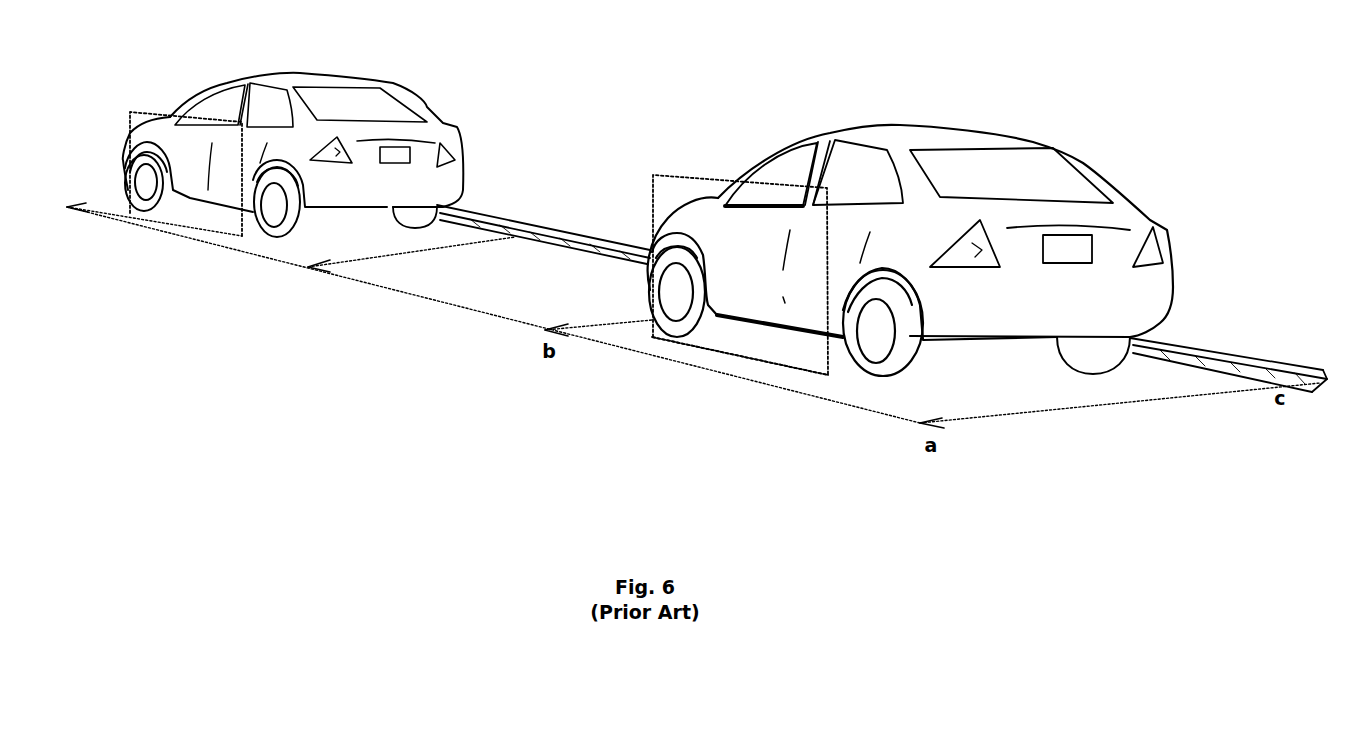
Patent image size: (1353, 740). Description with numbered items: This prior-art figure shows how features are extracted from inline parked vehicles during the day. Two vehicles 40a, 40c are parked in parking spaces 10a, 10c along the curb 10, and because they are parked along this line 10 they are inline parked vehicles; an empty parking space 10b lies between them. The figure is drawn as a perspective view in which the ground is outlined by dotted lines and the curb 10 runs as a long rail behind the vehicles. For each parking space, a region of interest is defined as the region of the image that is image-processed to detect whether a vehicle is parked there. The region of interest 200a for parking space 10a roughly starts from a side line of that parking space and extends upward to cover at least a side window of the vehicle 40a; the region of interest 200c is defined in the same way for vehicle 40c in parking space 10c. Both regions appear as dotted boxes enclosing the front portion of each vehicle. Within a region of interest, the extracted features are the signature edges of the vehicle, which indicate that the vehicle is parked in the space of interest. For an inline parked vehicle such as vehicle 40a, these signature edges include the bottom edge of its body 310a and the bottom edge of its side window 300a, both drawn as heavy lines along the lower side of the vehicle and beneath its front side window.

The curb 10 is at (1247, 362).
The parking space 10a is at (758, 375).
The parking space 10b is at (545, 295).
The parking space 10c is at (203, 233).
The vehicle 40a is at (993, 190).
The vehicle 40c is at (380, 116).
The region of interest 200a is at (708, 175).
The region of interest 200c is at (160, 113).
The bottom edge of side window 300a is at (750, 209).
The bottom edge of body 310a is at (805, 326).